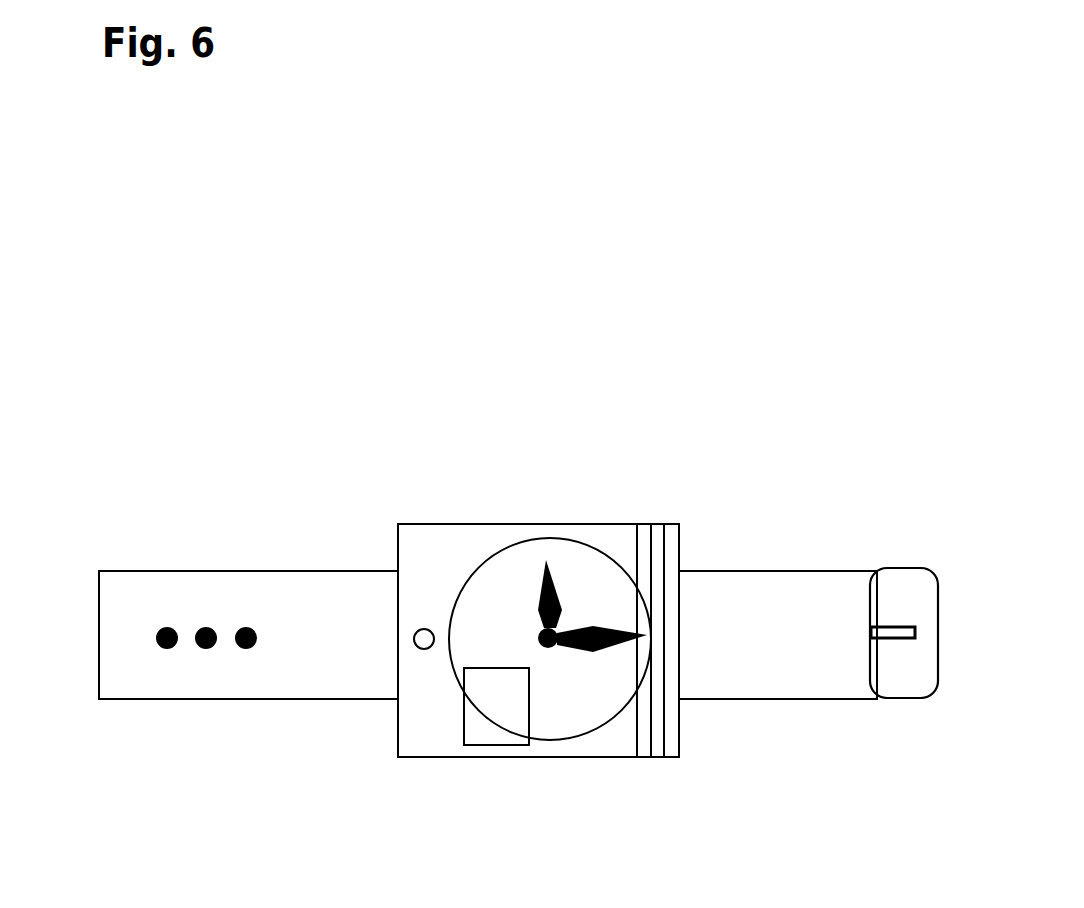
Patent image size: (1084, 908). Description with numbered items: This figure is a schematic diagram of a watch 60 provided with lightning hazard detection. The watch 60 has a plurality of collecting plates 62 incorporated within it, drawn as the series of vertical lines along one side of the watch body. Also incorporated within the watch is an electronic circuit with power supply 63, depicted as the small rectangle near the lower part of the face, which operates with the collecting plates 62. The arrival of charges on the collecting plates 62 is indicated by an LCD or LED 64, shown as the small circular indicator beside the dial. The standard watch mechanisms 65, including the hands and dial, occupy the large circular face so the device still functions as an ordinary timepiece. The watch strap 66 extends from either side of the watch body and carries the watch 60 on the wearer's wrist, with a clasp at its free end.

The watch 60 is at (640, 318).
The collecting plates 62 is at (608, 735).
The electronic circuit with power supply 63 is at (506, 742).
The LCD or LED 64 is at (424, 649).
The standard watch mechanisms 65 is at (582, 542).
The watch strap 66 is at (236, 675).